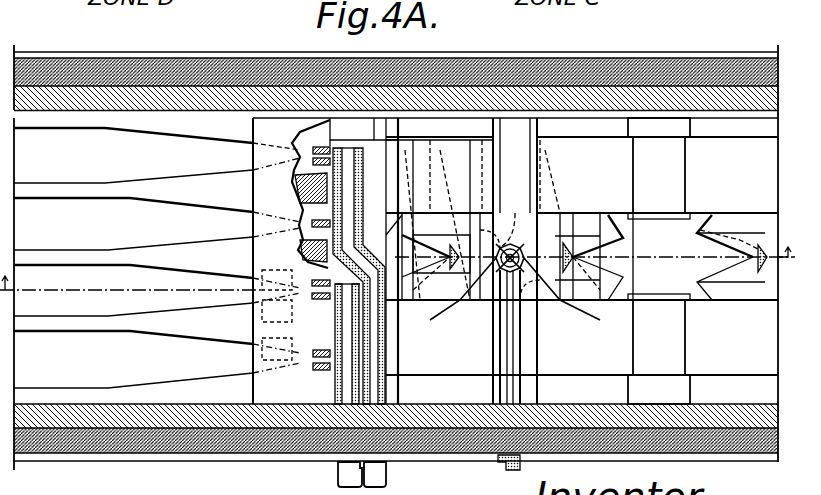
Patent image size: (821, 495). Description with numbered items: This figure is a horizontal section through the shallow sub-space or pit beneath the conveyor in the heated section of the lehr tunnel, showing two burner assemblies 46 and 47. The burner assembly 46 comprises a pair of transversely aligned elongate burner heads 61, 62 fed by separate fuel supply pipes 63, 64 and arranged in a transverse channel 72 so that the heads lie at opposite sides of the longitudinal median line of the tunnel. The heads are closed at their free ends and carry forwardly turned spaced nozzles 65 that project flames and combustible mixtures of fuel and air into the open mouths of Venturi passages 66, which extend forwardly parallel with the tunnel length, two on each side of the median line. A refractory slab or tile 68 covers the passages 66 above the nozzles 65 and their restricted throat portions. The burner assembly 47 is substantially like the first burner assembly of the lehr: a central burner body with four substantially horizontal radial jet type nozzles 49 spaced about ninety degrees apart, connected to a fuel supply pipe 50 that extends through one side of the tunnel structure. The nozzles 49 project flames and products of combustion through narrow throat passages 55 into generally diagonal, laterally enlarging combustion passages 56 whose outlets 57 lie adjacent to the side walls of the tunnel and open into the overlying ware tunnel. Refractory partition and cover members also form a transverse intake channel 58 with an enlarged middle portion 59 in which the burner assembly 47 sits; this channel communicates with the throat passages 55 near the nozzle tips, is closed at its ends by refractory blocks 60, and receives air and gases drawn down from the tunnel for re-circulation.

The burner assembly 46 is at (382, 243).
The burner assembly 47 is at (508, 266).
The radial jet type nozzles 49 is at (522, 240).
The fuel supply pipe 50 is at (516, 348).
The throat passages 55 is at (630, 234).
The rear main combustion passages 56 is at (485, 190).
The outlets 57 is at (607, 133).
The transverse intake channel 58 is at (520, 156).
The enlarged middle portion 59 is at (598, 247).
The refractory blocks 60 is at (518, 124).
The elongate burner head 61 is at (358, 186).
The elongate burner head 62 is at (340, 323).
The fuel supply pipe 63 is at (380, 458).
The fuel supply pipe 64 is at (345, 458).
The forwardly turned spaced nozzles 65 is at (322, 148).
The Venturi passages 66 is at (192, 176).
The refractory slab or tile 68 is at (298, 191).
The transverse channel 72 is at (380, 131).